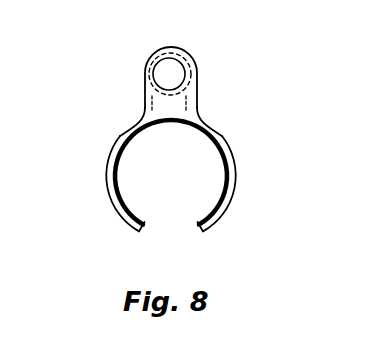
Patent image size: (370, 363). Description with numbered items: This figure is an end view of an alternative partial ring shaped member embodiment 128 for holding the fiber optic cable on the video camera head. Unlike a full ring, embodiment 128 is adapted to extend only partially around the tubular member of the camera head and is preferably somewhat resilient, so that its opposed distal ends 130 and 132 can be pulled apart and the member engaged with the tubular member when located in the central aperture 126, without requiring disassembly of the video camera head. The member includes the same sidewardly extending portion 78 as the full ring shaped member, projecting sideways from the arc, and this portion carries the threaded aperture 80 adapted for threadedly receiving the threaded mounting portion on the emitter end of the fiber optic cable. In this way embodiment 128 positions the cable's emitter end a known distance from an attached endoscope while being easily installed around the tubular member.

The sidewardly extending portion 78 is at (197, 103).
The threaded aperture 80 is at (160, 68).
The central aperture 126 is at (116, 156).
The partial ring shaped member embodiment 128 is at (236, 187).
The distal end 130 is at (138, 230).
The distal end 132 is at (206, 230).